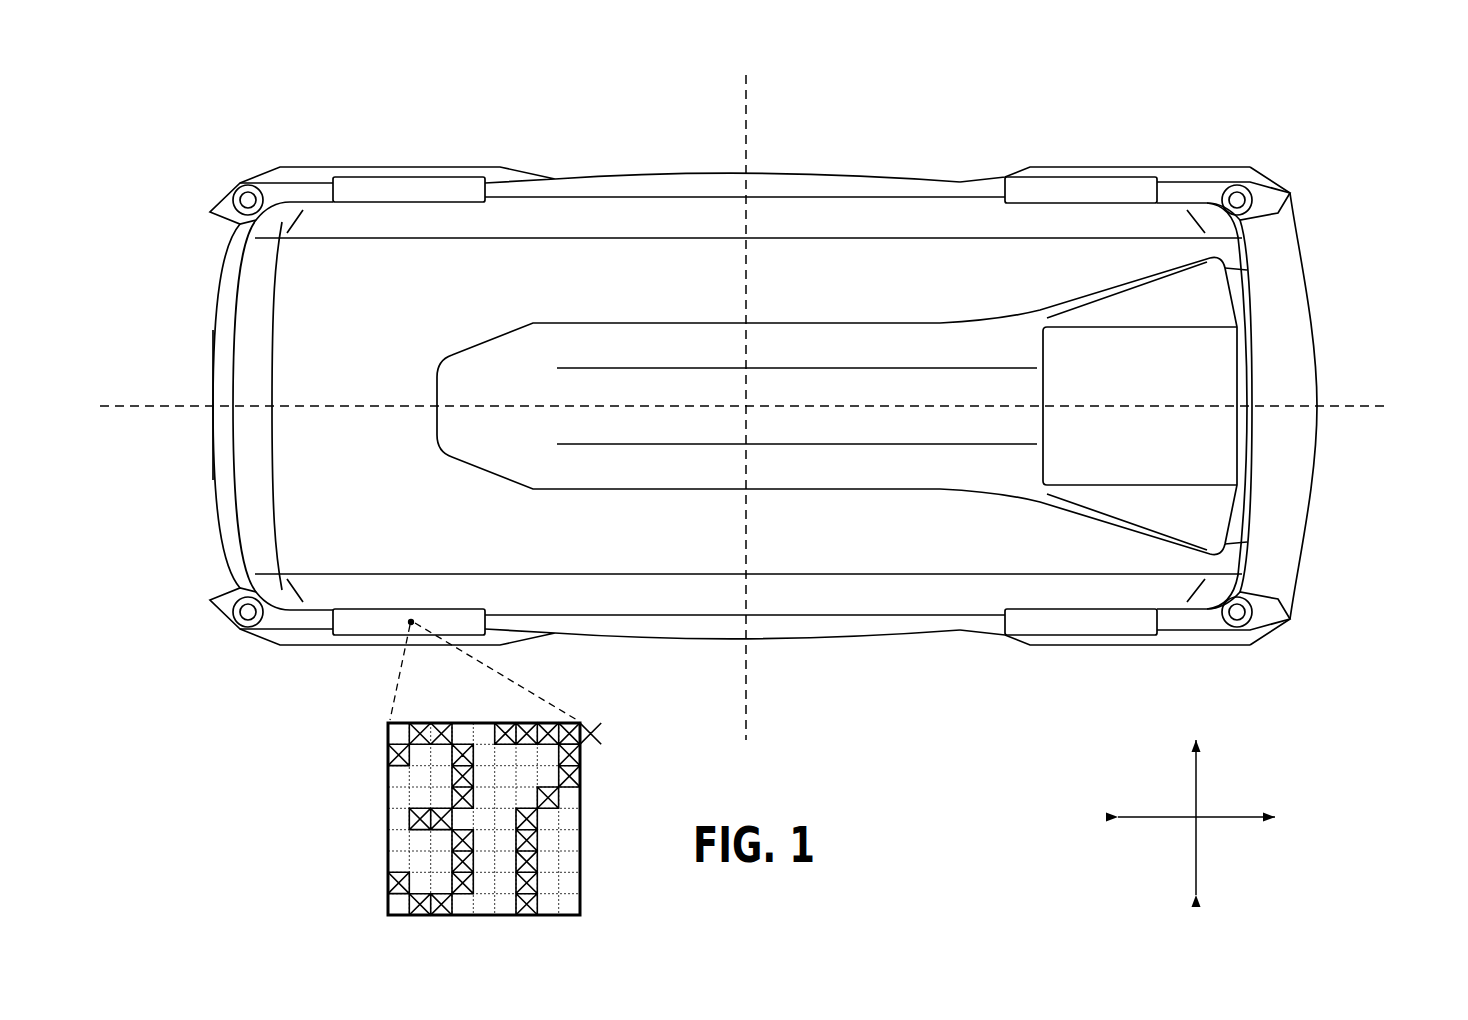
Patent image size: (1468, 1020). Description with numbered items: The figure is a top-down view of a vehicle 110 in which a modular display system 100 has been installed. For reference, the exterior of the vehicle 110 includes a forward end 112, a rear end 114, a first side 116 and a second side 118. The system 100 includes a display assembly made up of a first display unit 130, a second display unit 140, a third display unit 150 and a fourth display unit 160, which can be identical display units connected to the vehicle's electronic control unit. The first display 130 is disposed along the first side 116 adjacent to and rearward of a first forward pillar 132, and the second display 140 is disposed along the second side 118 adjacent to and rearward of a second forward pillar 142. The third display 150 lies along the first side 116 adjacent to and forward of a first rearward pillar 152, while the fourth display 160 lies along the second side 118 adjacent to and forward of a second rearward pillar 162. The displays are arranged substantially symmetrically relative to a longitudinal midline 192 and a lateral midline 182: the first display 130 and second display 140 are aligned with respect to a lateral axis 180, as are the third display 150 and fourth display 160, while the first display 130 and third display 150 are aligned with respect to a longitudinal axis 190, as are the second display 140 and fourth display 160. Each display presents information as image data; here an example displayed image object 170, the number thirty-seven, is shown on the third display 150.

The modular display system 100 is at (540, 110).
The vehicle 110 is at (1335, 320).
The forward end 112 is at (1335, 370).
The rear end 114 is at (190, 372).
The first side 116 is at (778, 665).
The second side 118 is at (710, 148).
The first display unit 130 is at (1082, 630).
The first forward pillar 132 is at (1240, 647).
The second display unit 140 is at (1082, 190).
The second forward pillar 142 is at (1242, 178).
The third display unit 150 is at (383, 620).
The first rearward pillar 152 is at (247, 645).
The fourth display unit 160 is at (410, 190).
The second rearward pillar 162 is at (250, 177).
The displayed image object 170 is at (365, 825).
The lateral axis 180 is at (1196, 783).
The lateral midline 182 is at (752, 103).
The longitudinal axis 190 is at (1162, 818).
The longitudinal midline 192 is at (155, 408).